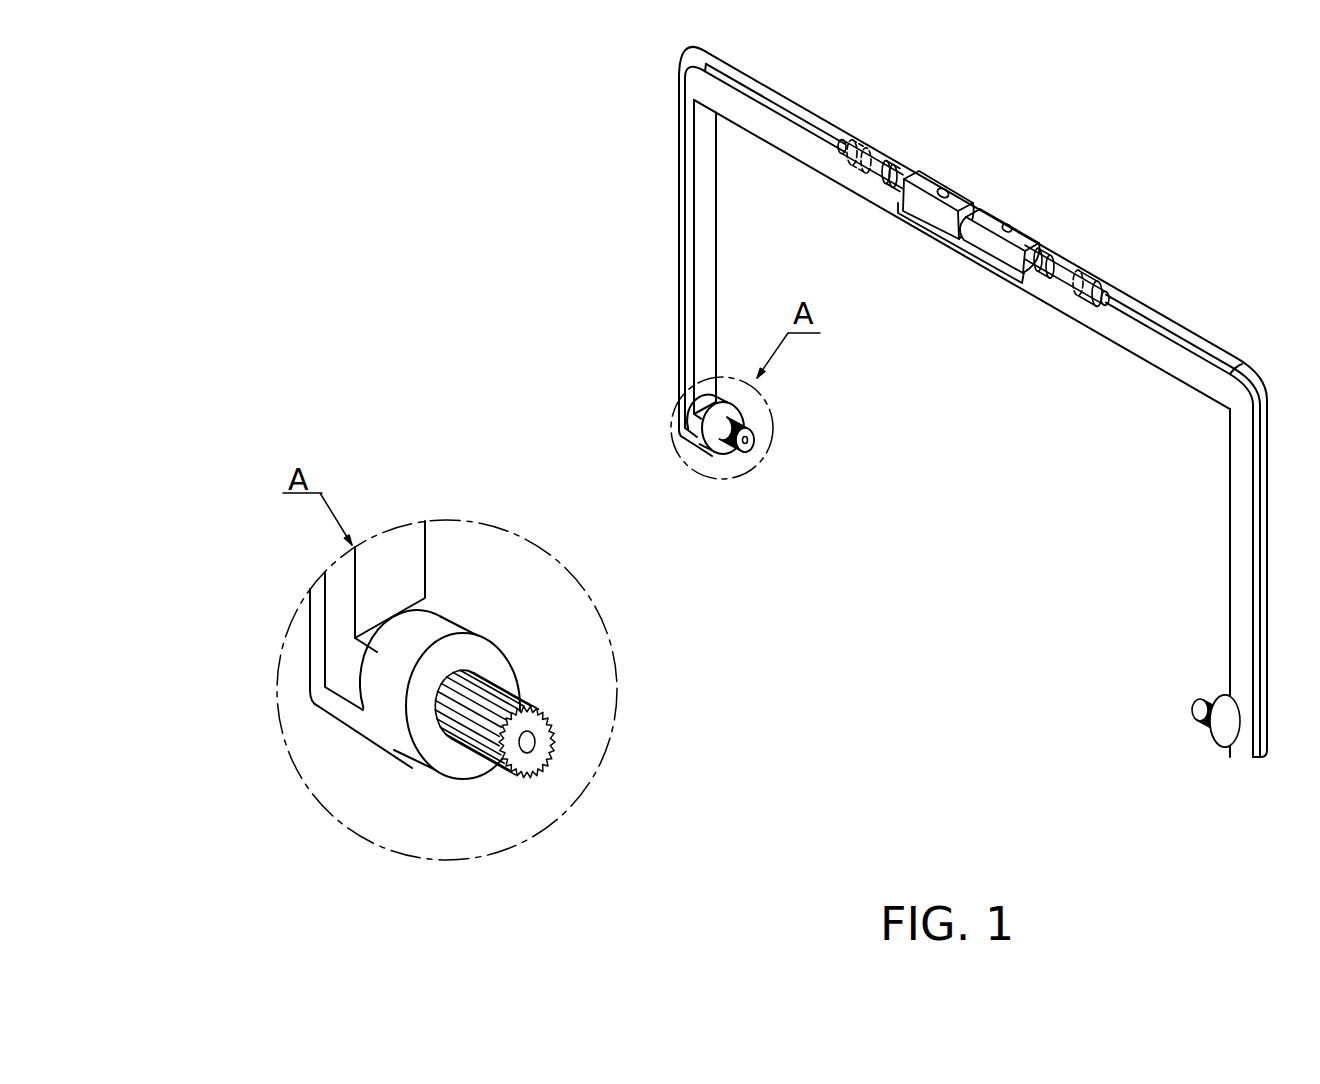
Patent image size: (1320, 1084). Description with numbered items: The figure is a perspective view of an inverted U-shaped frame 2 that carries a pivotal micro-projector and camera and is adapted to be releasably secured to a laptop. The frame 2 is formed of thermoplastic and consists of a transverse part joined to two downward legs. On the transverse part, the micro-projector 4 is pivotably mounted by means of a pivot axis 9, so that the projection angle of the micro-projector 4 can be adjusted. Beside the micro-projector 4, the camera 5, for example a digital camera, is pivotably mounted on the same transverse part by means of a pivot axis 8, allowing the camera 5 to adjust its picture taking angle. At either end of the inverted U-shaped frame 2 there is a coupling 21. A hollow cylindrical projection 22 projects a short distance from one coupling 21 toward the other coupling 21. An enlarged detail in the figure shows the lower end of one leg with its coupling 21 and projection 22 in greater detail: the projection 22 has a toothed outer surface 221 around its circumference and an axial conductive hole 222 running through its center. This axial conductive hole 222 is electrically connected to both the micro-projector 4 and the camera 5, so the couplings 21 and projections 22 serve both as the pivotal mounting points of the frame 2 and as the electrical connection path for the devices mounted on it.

The inverted U-shaped frame 2 is at (694, 178).
The micro-projector 4 is at (926, 186).
The camera 5 is at (1022, 230).
The pivot axis 8 is at (1080, 265).
The pivot axis 9 is at (872, 168).
The coupling 21 is at (688, 424).
The hollow cylindrical projection 22 is at (746, 443).
The toothed outer surface 221 is at (542, 702).
The axial conductive hole 222 is at (537, 742).